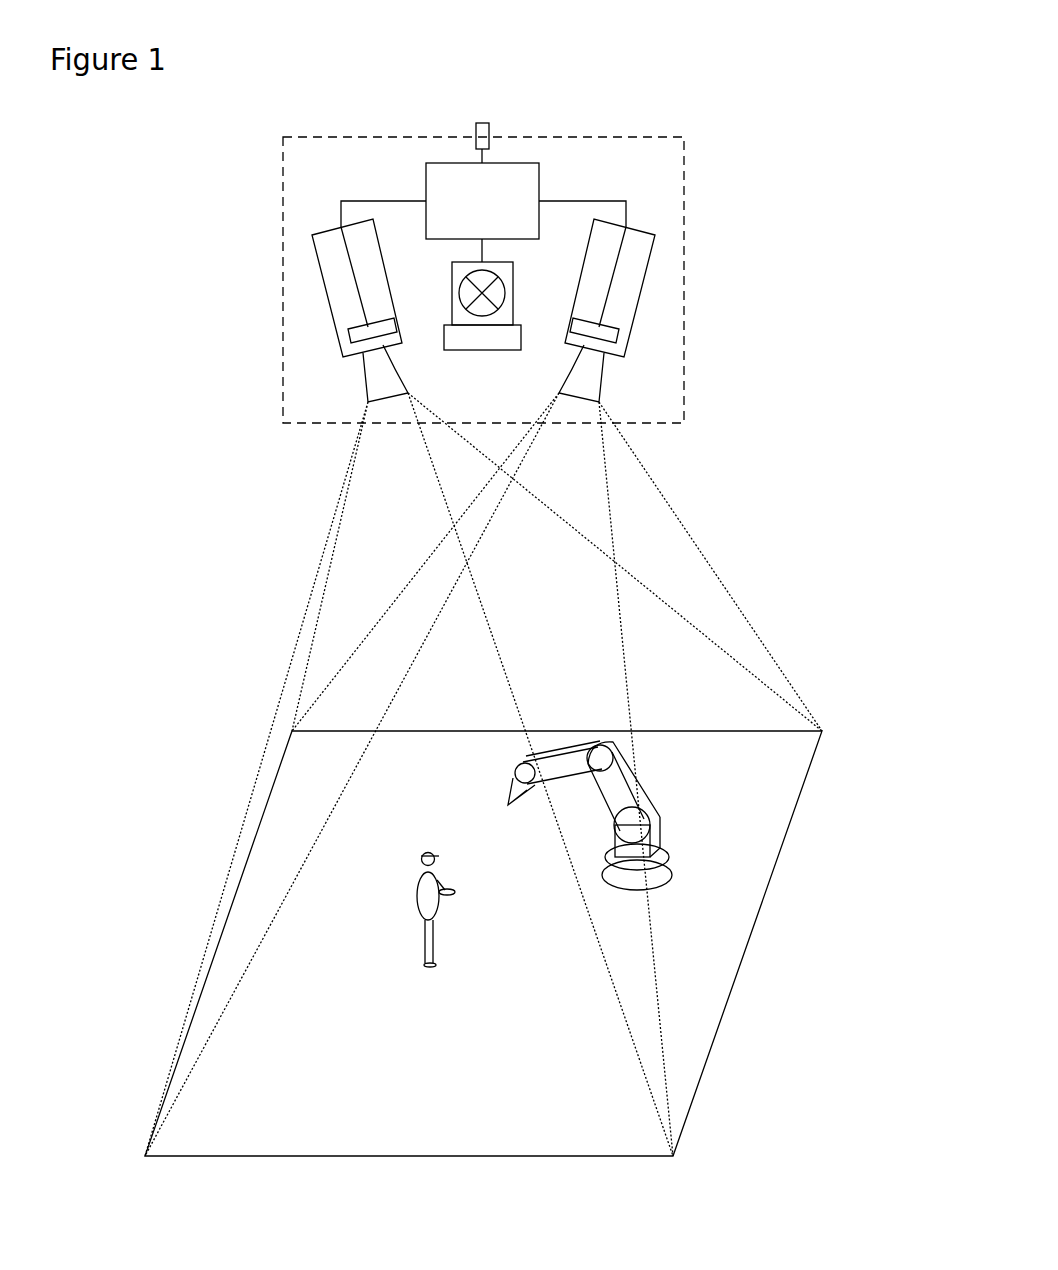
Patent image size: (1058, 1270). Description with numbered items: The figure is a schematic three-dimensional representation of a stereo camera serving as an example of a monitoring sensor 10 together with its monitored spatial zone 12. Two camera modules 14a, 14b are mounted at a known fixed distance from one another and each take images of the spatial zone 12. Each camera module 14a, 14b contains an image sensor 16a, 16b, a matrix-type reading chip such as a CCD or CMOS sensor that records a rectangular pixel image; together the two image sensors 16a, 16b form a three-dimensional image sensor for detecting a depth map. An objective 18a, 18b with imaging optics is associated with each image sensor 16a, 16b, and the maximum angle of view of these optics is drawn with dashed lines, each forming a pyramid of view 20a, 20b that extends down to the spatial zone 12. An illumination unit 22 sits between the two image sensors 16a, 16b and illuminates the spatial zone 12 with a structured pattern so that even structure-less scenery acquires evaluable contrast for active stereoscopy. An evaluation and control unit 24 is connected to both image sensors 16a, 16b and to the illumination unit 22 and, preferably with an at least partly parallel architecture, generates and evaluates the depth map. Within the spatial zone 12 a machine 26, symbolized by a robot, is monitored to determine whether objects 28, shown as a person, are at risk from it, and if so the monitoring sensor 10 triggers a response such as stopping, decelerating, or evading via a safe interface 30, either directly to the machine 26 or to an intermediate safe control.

The monitoring sensor 10 is at (685, 152).
The spatial zone 12 is at (788, 582).
The camera module 14a is at (333, 292).
The camera module 14b is at (648, 263).
The image sensor 16a is at (358, 347).
The image sensor 16b is at (628, 337).
The objective 18a is at (372, 382).
The objective 18b is at (606, 410).
The pyramid of view 20a is at (312, 594).
The pyramid of view 20b is at (707, 567).
The illumination unit 22 is at (538, 312).
The evaluation and control unit 24 is at (437, 173).
The machine 26 is at (658, 875).
The object 28 is at (421, 966).
The safe interface 30 is at (488, 128).